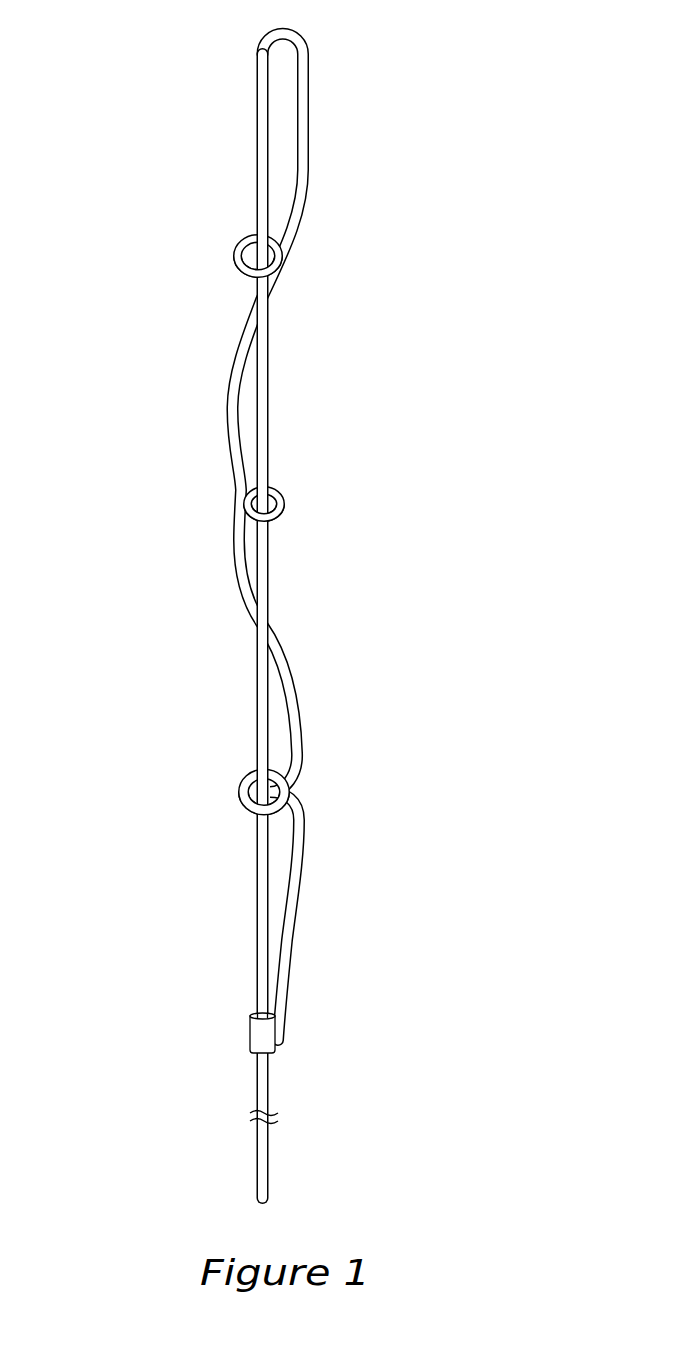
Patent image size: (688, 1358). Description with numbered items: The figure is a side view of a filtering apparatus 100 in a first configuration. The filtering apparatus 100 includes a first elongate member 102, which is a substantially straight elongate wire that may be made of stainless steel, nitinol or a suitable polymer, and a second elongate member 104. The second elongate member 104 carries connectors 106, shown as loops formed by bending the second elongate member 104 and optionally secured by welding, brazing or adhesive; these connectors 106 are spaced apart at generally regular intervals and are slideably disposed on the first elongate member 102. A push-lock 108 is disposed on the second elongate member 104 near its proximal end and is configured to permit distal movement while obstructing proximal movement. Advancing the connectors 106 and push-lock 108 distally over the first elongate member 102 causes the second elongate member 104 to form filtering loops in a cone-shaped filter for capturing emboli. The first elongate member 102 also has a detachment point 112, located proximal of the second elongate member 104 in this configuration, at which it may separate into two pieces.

The filtering apparatus 100 is at (160, 68).
The first elongate member 102 is at (257, 715).
The second elongate member 104 is at (312, 176).
The connectors 106 is at (233, 259).
The push-lock 108 is at (250, 1034).
The detachment point 112 is at (258, 1154).